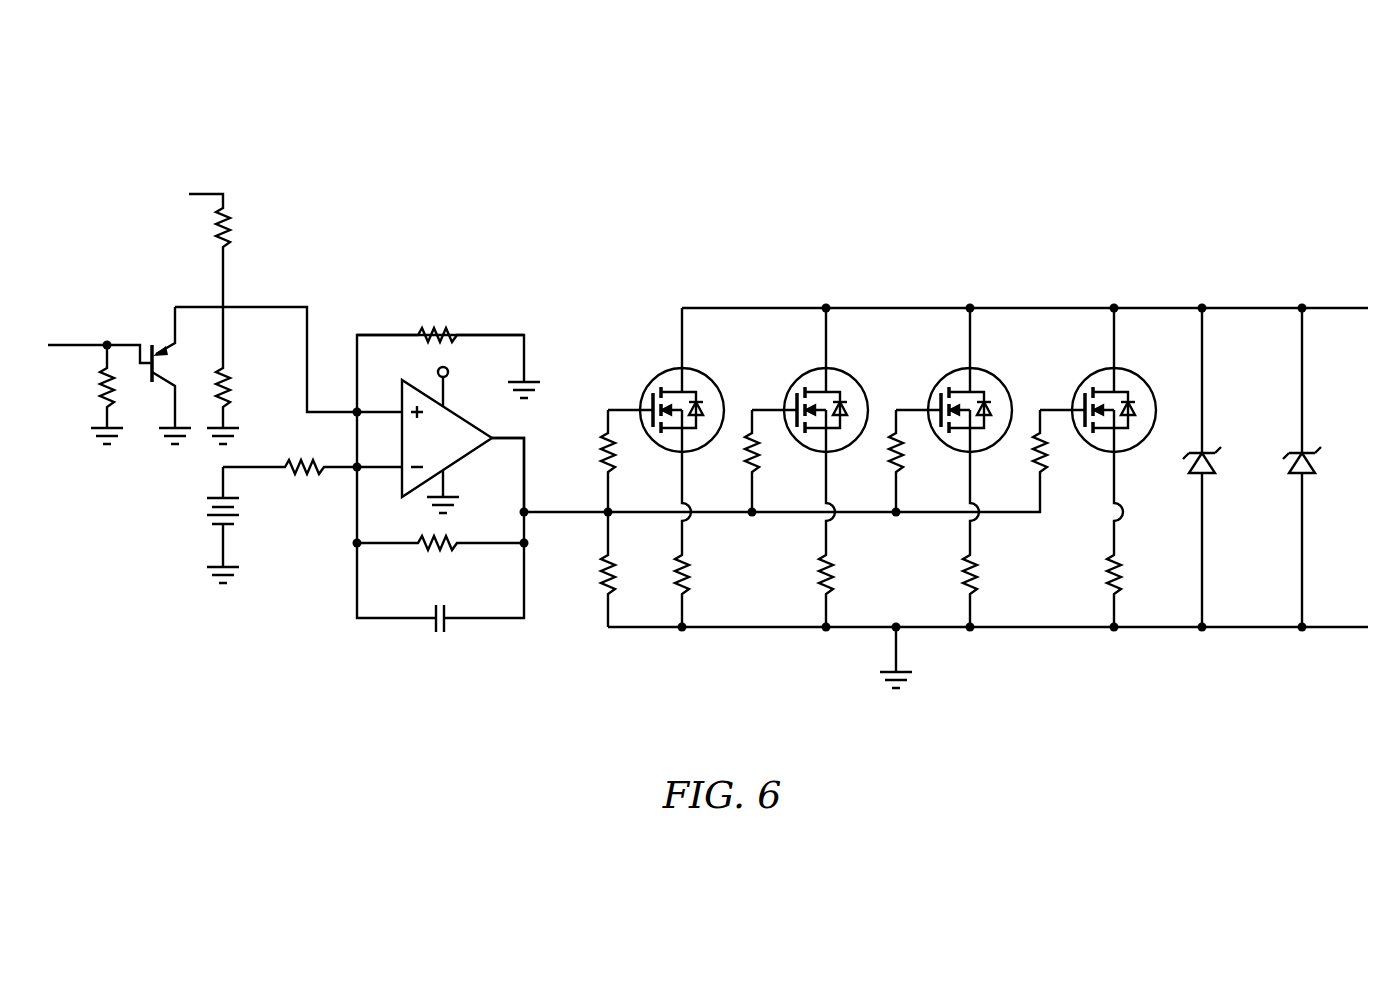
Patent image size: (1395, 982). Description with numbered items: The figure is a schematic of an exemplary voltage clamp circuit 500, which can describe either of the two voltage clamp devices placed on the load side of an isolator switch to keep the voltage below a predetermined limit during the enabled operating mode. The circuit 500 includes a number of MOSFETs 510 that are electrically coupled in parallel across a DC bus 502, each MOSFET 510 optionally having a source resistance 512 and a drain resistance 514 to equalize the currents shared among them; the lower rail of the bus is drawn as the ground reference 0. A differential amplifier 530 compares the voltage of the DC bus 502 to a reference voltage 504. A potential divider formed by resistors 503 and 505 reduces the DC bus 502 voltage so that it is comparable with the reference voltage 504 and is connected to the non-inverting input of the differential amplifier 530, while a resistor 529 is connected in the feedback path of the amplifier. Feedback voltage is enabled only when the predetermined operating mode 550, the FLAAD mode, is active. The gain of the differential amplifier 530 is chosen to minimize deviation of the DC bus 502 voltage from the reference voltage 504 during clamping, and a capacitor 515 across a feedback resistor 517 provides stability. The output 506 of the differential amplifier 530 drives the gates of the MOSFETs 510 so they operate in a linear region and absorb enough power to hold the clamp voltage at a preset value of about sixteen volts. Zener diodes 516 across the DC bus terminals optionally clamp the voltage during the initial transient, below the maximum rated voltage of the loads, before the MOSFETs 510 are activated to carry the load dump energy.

The voltage clamp circuit 500 is at (152, 155).
The DC bus 502 is at (225, 199).
The resistor 503 is at (228, 246).
The reference voltage 504 is at (250, 468).
The resistor 505 is at (229, 395).
The output 506 is at (524, 458).
The MOSFET 510 is at (650, 376).
The source resistance 512 is at (613, 455).
The drain resistance 514 is at (690, 590).
The capacitor 515 is at (447, 625).
The Zener diode 516 is at (1215, 465).
The feedback resistor 517 is at (445, 545).
The resistor 529 is at (437, 333).
The differential amplifier 530 is at (440, 440).
The predetermined operating mode 550 is at (120, 343).
The ground line 0 is at (743, 630).